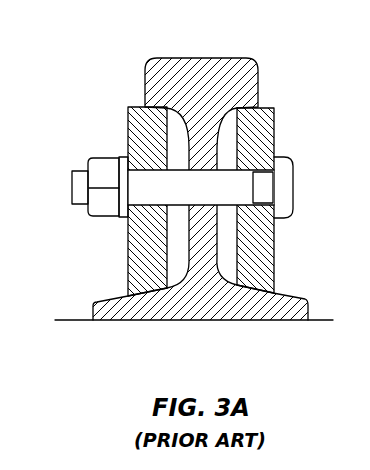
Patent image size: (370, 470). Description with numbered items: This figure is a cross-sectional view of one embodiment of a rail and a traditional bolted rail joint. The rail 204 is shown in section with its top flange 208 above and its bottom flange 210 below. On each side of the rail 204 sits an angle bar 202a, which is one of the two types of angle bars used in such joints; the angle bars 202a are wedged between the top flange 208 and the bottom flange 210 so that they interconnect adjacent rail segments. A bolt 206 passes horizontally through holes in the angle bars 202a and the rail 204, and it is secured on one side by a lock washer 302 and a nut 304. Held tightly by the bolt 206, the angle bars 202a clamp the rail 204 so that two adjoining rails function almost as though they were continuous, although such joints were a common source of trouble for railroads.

The rail 204 is at (220, 193).
The top flange 208 is at (172, 73).
The bottom flange 210 is at (253, 307).
The angle bar 202a is at (157, 137).
The bolt 206 is at (240, 187).
The nut 304 is at (103, 173).
The lock washer 302 is at (123, 215).